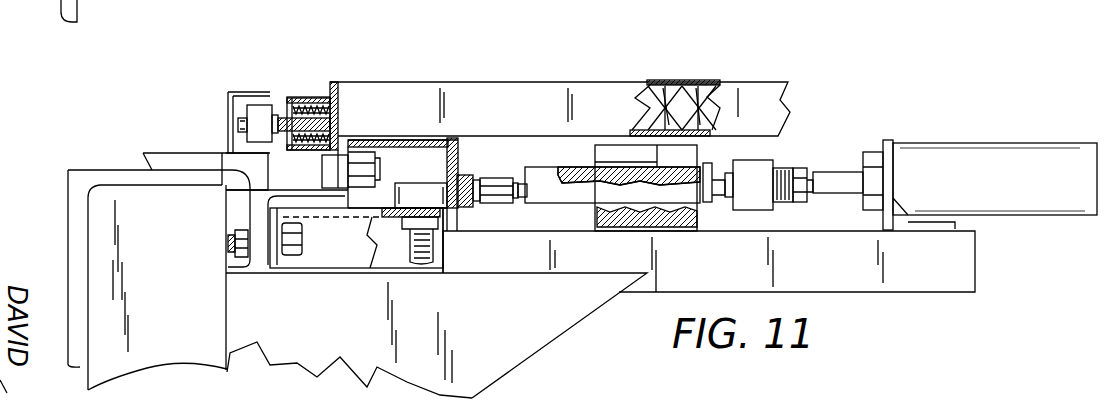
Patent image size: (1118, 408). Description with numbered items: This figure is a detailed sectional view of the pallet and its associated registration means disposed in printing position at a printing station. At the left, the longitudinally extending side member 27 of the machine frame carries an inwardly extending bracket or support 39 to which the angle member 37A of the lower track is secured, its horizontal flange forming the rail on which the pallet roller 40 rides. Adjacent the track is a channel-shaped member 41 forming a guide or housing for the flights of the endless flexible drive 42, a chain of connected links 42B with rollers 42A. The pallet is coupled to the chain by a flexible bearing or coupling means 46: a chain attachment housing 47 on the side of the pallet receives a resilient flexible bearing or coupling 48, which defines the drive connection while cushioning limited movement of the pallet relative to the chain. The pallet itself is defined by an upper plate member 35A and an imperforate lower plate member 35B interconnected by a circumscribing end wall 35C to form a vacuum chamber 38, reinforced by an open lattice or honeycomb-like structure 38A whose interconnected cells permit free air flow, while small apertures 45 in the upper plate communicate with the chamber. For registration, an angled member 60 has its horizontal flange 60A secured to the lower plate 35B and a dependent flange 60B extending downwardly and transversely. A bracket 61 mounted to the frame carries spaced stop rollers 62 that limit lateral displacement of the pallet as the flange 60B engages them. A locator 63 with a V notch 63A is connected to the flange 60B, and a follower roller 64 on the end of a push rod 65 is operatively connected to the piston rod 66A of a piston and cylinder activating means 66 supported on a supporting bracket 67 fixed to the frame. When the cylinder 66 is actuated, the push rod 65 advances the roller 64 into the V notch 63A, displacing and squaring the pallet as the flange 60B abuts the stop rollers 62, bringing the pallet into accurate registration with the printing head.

The side member 27 is at (68, 200).
The bracket or support 39 is at (185, 153).
The channel-shaped member 41 is at (227, 128).
The endless flexible drive 42 is at (281, 93).
The roller 42A is at (260, 138).
The link 42B is at (245, 110).
The flexible bearing or coupling means 46 is at (316, 106).
The chain attachment housing 47 is at (314, 90).
The flexible bearing or coupling 48 is at (317, 109).
The pallet roller 40 is at (338, 167).
The horizontal flange 60A is at (408, 137).
The circumscribing end wall 35C is at (510, 118).
The angled member 60 is at (465, 142).
The dependent flange 60B is at (459, 160).
The stop roller 62 is at (425, 192).
The locator 63 is at (463, 208).
The V notch 63A is at (478, 205).
The roller 64 is at (524, 197).
The bracket 61 is at (337, 212).
The angle member 37A is at (268, 267).
The vacuum chamber 38 is at (705, 83).
The open lattice or honeycomb-like structure 38A is at (653, 127).
The small apertures 45 is at (652, 78).
The upper plate member 35A is at (668, 82).
The lower plate member 35B is at (707, 136).
The push rod 65 is at (720, 197).
The piston and cylinder activating means 66 is at (970, 157).
The piston rod 66A is at (820, 185).
The supporting bracket 67 is at (827, 273).